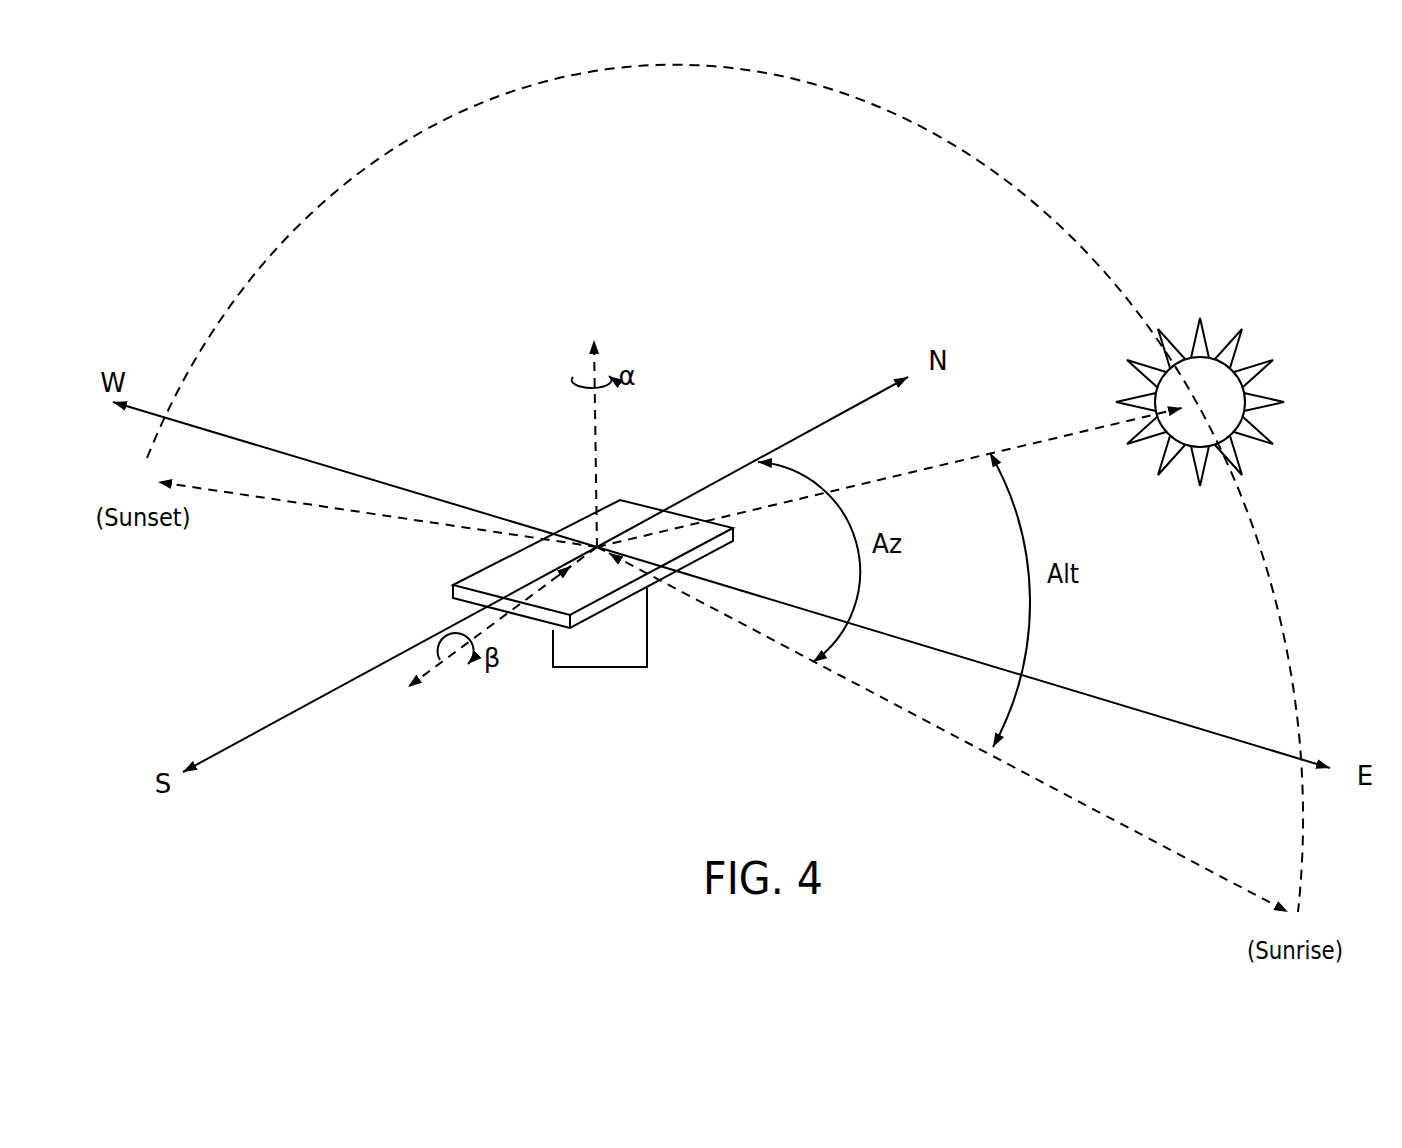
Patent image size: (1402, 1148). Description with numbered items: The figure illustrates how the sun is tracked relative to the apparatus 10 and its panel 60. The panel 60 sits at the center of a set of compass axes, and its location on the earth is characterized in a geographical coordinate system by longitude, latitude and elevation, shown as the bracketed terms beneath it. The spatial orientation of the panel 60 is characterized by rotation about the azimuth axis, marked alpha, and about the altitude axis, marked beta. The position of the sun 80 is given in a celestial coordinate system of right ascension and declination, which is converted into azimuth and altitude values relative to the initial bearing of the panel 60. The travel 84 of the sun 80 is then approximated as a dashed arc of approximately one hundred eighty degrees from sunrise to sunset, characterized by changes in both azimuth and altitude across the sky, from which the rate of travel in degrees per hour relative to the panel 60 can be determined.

The solar tracking system 10 is at (475, 748).
The panel 60 is at (587, 520).
The sun 80 is at (1247, 310).
The travel 84 is at (1041, 193).